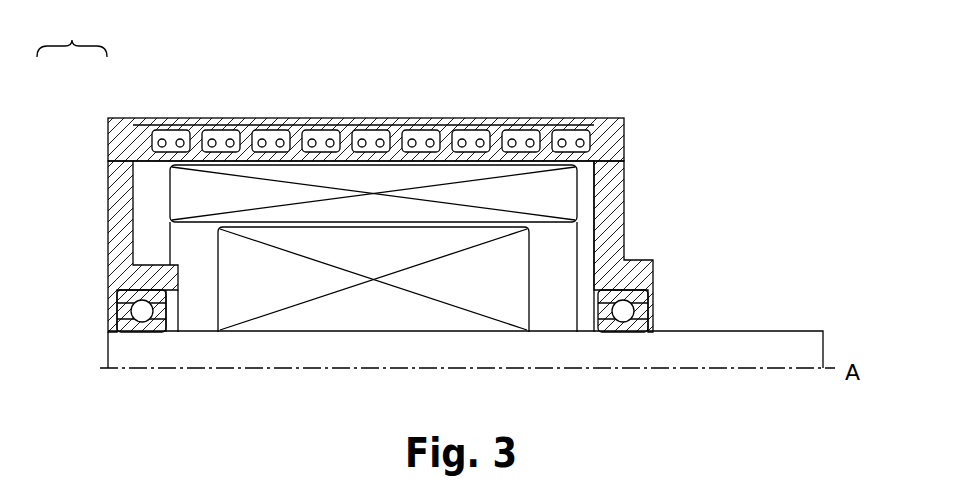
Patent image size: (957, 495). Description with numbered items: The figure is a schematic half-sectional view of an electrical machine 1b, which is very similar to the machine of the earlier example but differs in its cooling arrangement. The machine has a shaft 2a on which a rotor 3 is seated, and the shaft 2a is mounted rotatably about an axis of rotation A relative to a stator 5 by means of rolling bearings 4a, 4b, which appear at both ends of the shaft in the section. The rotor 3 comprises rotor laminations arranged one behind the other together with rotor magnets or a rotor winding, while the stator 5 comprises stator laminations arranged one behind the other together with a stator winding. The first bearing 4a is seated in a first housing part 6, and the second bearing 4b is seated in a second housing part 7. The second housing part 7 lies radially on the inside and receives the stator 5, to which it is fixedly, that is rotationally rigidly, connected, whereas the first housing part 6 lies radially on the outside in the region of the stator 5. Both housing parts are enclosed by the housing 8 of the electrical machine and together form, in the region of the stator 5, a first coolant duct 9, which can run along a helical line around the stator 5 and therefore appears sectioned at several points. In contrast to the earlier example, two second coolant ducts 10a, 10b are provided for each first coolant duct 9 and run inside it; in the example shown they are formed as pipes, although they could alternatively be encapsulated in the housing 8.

The electrical machine 1b is at (765, 95).
The shaft 2a is at (125, 352).
The rotor 3 is at (510, 260).
The first bearing 4a is at (126, 311).
The second bearing 4b is at (640, 312).
The stator 5 is at (180, 203).
The first housing part 6 is at (116, 142).
The second housing part 7 is at (140, 138).
The housing 8 is at (72, 31).
The first coolant duct 9 is at (583, 137).
The second coolant duct 10a is at (552, 135).
The second coolant duct 10b is at (578, 140).